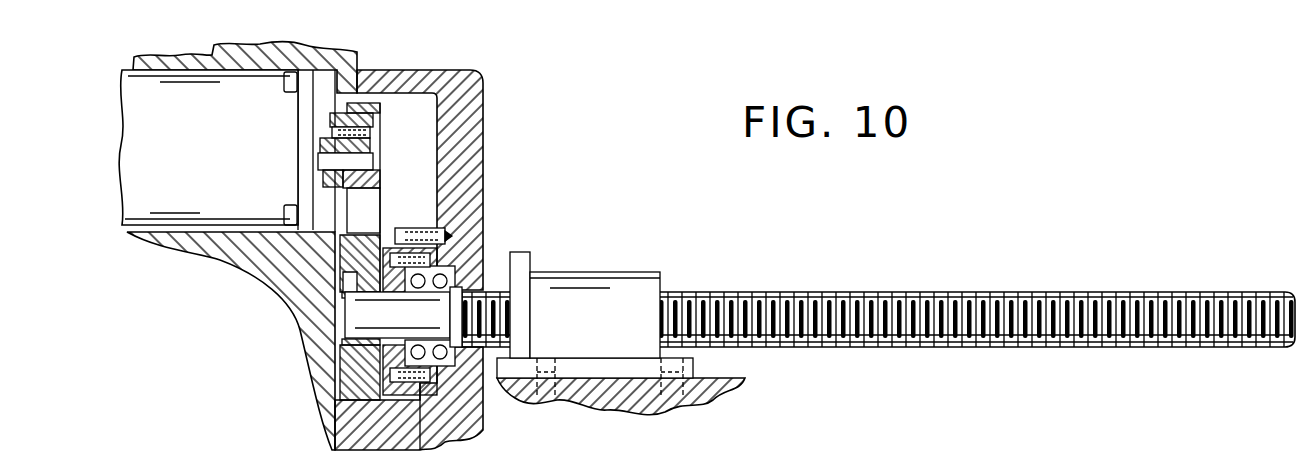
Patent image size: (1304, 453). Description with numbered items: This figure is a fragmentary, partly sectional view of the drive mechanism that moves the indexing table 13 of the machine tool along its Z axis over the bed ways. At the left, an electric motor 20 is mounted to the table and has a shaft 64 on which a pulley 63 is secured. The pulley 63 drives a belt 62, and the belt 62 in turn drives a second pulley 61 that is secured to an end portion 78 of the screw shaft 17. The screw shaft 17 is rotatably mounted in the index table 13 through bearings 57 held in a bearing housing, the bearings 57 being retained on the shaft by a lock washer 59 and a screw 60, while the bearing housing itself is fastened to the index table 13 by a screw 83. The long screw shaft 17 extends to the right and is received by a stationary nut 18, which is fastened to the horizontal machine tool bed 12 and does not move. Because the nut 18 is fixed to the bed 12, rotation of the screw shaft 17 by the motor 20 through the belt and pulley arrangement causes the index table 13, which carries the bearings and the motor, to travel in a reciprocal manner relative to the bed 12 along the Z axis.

The horizontal bed 12 is at (703, 392).
The indexing table 13 is at (468, 106).
The screw shaft 17 is at (846, 298).
The stationary nut 18 is at (618, 280).
The electric motor 20 is at (212, 158).
The bearings 57 is at (478, 282).
The lock washer 59 is at (400, 252).
The screw 60 is at (440, 224).
The pulley 61 is at (343, 368).
The belt 62 is at (363, 218).
The pulley 63 is at (362, 180).
The shaft 64 is at (330, 158).
The end portion 78 is at (413, 314).
The screw 83 is at (455, 233).